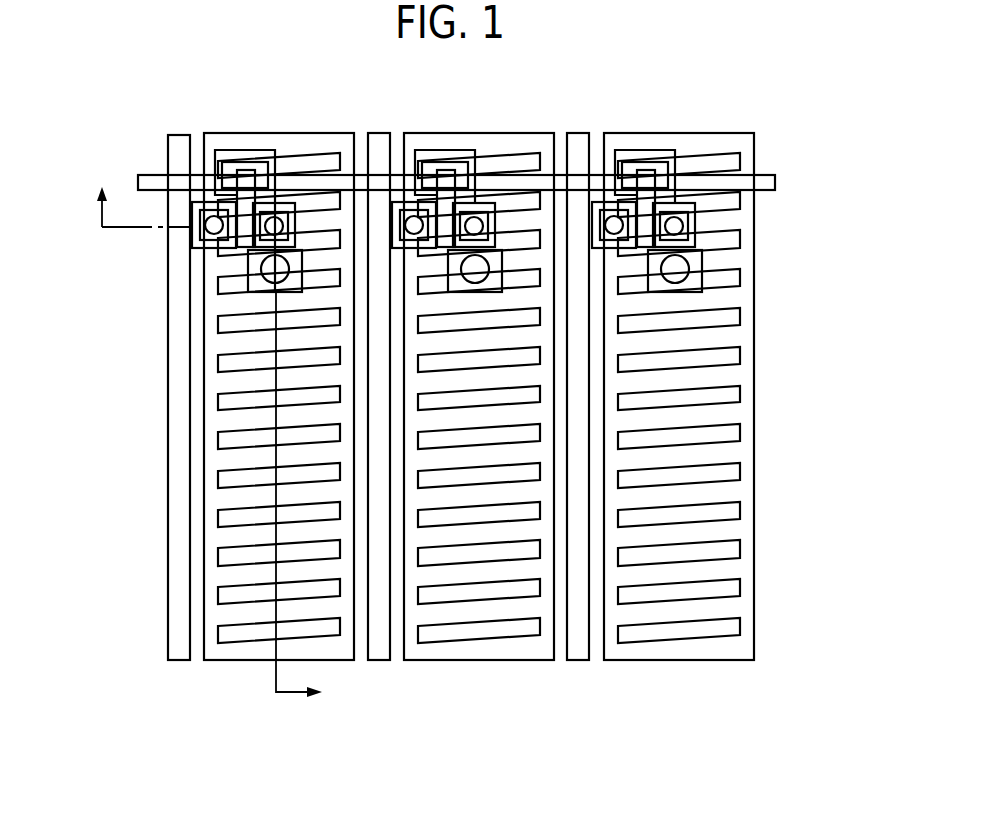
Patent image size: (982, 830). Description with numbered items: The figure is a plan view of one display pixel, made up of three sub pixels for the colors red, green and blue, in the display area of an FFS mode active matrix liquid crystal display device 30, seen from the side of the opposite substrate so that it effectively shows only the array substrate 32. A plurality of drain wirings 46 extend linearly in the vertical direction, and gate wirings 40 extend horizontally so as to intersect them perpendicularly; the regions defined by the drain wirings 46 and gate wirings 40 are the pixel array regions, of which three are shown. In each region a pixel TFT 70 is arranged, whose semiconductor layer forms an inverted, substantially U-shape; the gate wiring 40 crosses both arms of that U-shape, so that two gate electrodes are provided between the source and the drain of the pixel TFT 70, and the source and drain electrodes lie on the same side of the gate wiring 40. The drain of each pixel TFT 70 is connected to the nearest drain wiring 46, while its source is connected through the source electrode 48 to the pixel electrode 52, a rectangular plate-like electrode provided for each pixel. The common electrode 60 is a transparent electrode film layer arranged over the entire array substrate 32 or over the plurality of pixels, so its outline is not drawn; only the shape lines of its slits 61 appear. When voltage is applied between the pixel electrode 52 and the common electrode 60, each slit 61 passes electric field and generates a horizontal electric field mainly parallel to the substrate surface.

The FFS mode liquid crystal display device 30 is at (727, 97).
The array substrate 32 is at (727, 97).
The gate wiring 40 is at (138, 185).
The drain wiring 46 is at (182, 655).
The source electrode 48 is at (248, 267).
The pixel electrode 52 is at (327, 662).
The common electrode 60 is at (768, 422).
The slit 61 is at (728, 471).
The pixel TFT 70 is at (288, 143).